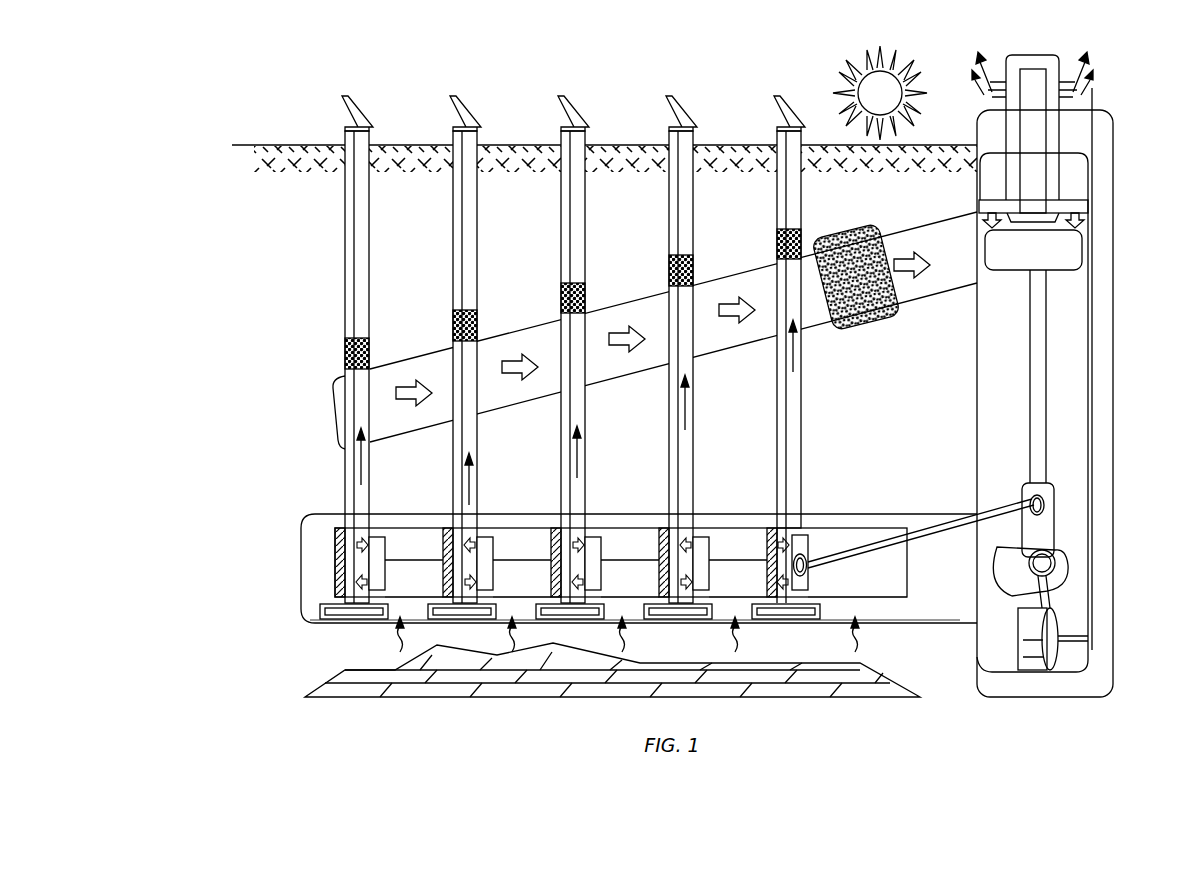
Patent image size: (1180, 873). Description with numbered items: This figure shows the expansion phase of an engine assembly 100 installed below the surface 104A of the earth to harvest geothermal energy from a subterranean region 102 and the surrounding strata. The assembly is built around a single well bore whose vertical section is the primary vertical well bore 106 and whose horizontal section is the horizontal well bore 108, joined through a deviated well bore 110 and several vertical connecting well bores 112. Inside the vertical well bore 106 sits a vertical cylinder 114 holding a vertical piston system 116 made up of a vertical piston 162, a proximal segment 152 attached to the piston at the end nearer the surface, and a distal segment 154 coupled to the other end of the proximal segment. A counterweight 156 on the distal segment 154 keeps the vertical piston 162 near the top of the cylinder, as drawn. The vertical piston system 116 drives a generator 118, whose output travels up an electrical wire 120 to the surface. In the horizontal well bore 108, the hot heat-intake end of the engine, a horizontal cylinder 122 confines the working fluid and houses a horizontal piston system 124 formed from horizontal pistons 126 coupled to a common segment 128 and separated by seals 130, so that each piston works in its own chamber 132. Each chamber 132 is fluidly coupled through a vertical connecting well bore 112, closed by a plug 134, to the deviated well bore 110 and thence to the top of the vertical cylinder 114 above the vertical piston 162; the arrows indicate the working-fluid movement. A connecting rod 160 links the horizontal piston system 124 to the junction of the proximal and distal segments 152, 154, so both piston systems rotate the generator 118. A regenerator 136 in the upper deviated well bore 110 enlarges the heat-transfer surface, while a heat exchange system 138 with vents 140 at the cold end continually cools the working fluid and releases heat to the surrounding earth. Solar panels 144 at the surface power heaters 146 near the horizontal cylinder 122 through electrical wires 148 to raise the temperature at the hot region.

The engine assembly 100 is at (913, 36).
The subterranean region 102 is at (862, 690).
The surface of the earth 104A is at (252, 146).
The primary vertical well bore 106 is at (1113, 420).
The horizontal well bore 108 is at (301, 540).
The deviated well bore 110 is at (332, 405).
The vertical connecting well bores 112 is at (370, 468).
The vertical cylinder 114 is at (1084, 674).
The vertical piston system 116 is at (1050, 447).
The generator 118 is at (1024, 642).
The electrical wire 120 is at (1092, 497).
The horizontal cylinder 122 is at (876, 528).
The horizontal piston system 124 is at (323, 591).
The horizontal pistons 126 is at (385, 545).
The common segment 128 is at (399, 567).
The seals 130 is at (335, 552).
The chambers 132 is at (921, 577).
The plug 134 is at (345, 352).
The regenerator 136 is at (885, 322).
The heat exchange system 138 is at (1037, 133).
The vents 140 is at (995, 72).
The solar panels 144 is at (357, 108).
The heaters 146 is at (352, 612).
The electrical wires 148 is at (345, 240).
The proximal segment 152 is at (1035, 340).
The distal segment 154 is at (1045, 530).
The counterweight 156 is at (1058, 585).
The connecting rod 160 is at (950, 523).
The vertical piston 162 is at (1075, 250).